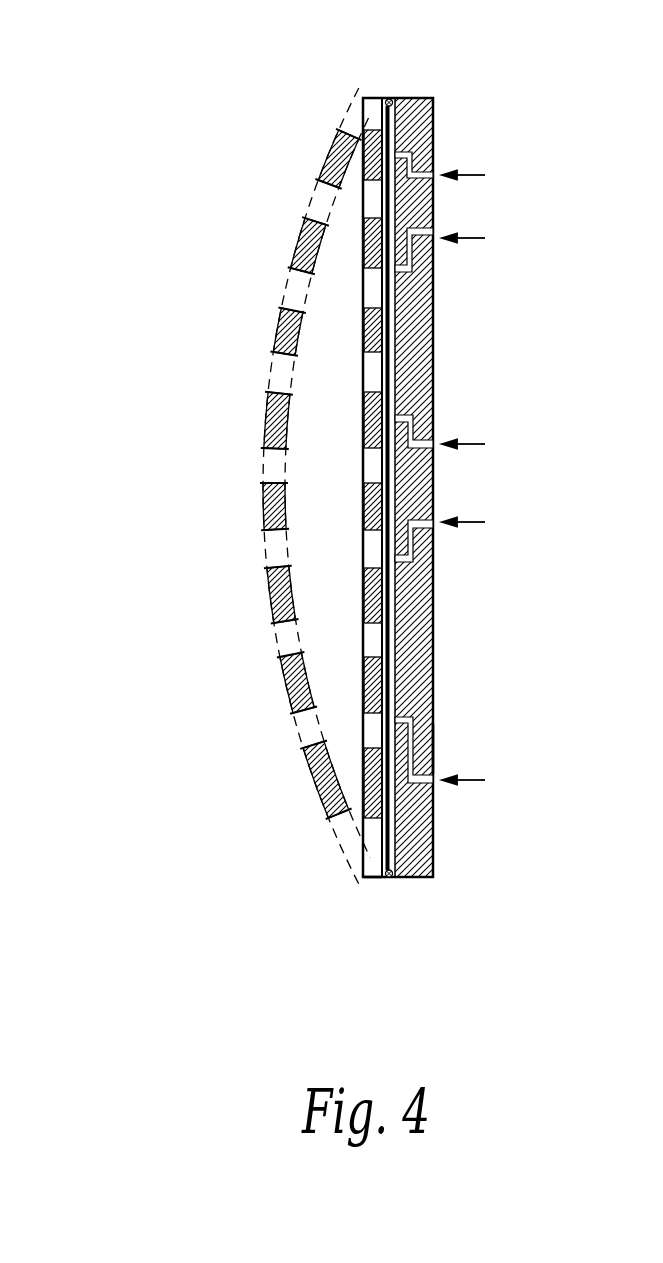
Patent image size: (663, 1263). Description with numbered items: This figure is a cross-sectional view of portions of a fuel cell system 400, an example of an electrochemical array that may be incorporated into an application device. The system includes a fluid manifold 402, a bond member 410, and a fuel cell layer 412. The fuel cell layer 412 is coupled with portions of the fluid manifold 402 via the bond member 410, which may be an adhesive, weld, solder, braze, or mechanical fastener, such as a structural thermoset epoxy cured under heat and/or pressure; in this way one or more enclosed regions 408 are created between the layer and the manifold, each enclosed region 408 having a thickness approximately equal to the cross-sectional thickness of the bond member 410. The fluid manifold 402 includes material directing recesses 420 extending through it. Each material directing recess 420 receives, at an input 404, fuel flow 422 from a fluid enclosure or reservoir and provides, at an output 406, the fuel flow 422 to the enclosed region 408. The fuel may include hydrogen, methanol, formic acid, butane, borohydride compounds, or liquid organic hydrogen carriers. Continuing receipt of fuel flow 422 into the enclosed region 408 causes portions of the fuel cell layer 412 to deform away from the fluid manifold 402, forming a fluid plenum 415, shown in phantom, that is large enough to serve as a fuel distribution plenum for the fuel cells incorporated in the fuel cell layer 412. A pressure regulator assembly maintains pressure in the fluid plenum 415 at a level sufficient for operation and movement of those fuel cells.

The fuel cell system 400 is at (153, 63).
The fluid manifold 402 is at (420, 835).
The input 404 is at (434, 524).
The output 406 is at (405, 718).
The enclosed region 408 is at (387, 466).
The bond member 410 is at (390, 879).
The fuel cell layer 412 is at (376, 860).
The fluid plenum 415 is at (322, 598).
The material directing recess 420 is at (415, 745).
The fuel flow 422 is at (468, 446).